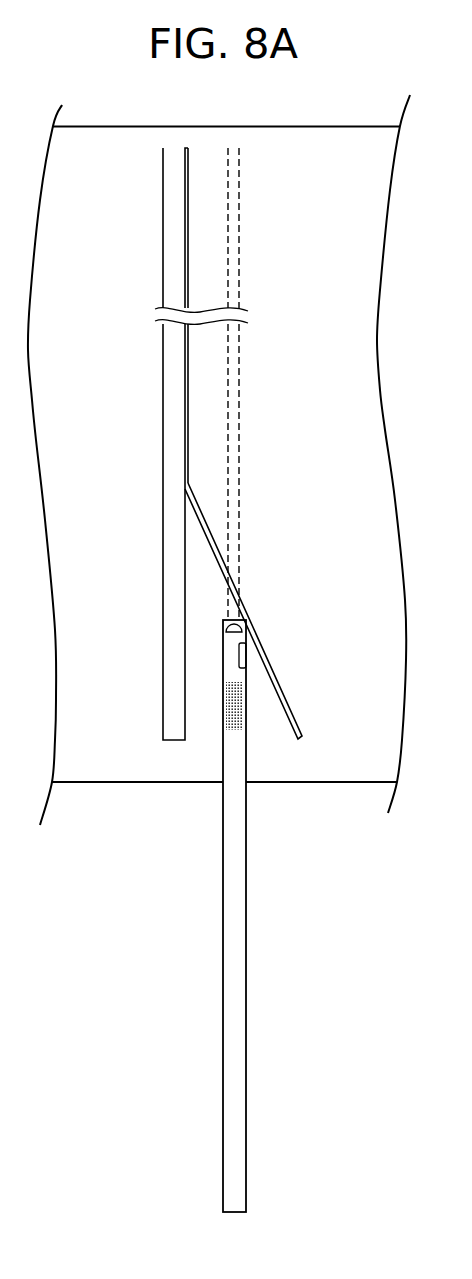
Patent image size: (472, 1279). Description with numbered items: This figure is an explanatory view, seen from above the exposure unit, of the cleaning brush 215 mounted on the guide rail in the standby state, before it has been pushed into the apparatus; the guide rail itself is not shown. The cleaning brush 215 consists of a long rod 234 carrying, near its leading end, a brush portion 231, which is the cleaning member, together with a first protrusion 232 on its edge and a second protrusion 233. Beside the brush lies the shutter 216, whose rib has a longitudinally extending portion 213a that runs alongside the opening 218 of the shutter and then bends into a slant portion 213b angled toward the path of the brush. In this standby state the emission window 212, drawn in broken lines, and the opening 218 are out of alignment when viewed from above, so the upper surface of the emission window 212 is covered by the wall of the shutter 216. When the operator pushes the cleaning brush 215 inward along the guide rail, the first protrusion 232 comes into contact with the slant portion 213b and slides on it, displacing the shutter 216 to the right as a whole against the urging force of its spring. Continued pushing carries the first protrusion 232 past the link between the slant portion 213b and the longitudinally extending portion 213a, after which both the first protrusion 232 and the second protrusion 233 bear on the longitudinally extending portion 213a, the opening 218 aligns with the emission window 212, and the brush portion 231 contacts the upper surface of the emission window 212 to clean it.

The longitudinally extending portion 213a is at (188, 235).
The slant portion 213b is at (288, 701).
The emission window 212 is at (233, 397).
The opening 218 is at (163, 515).
The first protrusion 232 is at (223, 629).
The second protrusion 233 is at (247, 653).
The brush portion 231 is at (232, 709).
The shutter 216 is at (152, 772).
The rod 234 is at (240, 828).
The cleaning brush 215 is at (250, 1088).